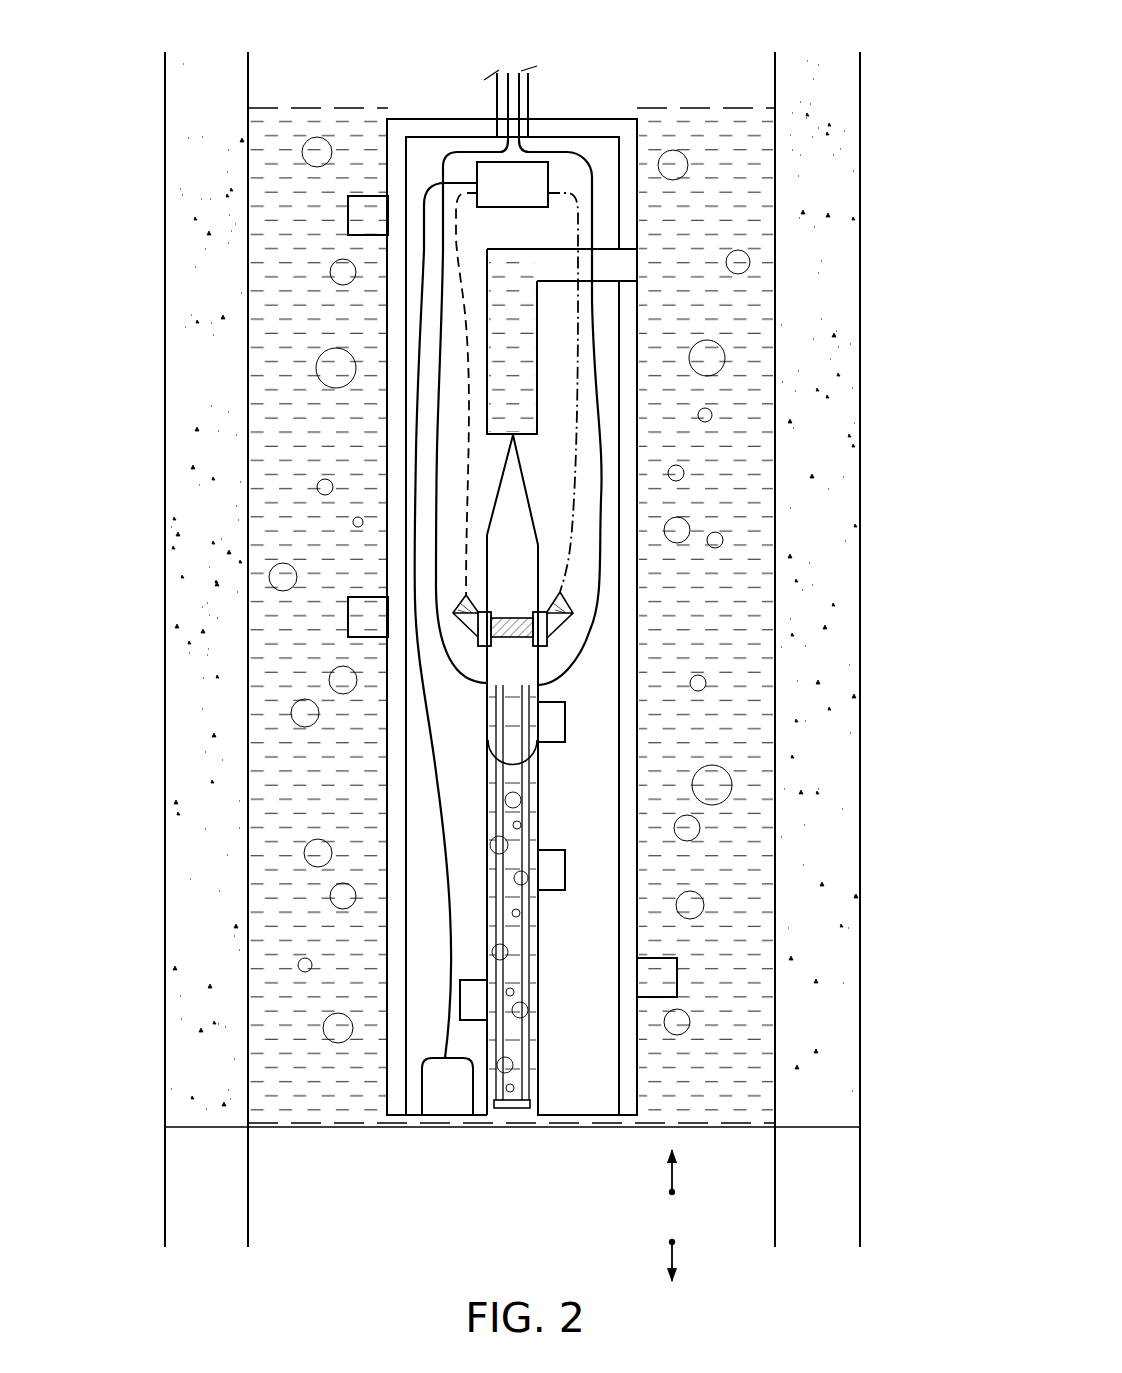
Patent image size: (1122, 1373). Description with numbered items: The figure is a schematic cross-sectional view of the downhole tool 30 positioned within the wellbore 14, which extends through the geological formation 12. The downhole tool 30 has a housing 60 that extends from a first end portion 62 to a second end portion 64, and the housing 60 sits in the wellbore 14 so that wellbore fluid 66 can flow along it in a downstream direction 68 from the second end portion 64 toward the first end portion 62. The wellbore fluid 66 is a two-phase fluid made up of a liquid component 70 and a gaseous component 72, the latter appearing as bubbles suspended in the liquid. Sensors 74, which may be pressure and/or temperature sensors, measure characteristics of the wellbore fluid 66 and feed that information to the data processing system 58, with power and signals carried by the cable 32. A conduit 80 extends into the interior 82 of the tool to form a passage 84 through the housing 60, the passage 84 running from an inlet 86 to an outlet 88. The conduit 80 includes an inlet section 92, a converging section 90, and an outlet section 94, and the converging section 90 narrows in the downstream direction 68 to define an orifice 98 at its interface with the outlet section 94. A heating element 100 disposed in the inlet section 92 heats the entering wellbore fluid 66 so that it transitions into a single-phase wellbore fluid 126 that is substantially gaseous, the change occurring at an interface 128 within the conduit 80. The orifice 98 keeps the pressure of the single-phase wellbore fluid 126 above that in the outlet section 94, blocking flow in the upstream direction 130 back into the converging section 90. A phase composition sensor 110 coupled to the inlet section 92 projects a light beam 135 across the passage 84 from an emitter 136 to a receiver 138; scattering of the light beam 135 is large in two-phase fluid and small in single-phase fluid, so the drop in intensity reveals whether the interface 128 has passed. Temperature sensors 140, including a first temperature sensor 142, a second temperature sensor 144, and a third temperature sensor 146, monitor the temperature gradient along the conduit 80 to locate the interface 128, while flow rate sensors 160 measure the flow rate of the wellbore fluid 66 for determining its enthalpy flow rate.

The geological formation 12 is at (845, 862).
The wellbore 14 is at (868, 635).
The downhole tool 30 is at (641, 487).
The cable 32 is at (530, 80).
The data processing system 58 is at (512, 184).
The housing 60 is at (628, 422).
The first end portion 62 is at (559, 628).
The second end portion 64 is at (378, 1134).
The wellbore fluid 66 is at (538, 1050).
The downstream direction 68 is at (676, 1170).
The liquid component 70 is at (511, 615).
The gaseous component 72 is at (330, 896).
The sensors 74 is at (348, 215).
The conduit 80 is at (538, 1100).
The interior 82 is at (578, 830).
The passage 84 is at (512, 341).
The inlet 86 is at (502, 1119).
The outlet 88 is at (629, 262).
The converging section 90 is at (536, 486).
The inlet section 92 is at (550, 907).
The outlet section 94 is at (545, 357).
The orifice 98 is at (515, 433).
The heating element 100 is at (488, 820).
The phase composition sensor 110 is at (513, 601).
The single-phase wellbore fluid 126 is at (510, 536).
The interface 128 is at (500, 765).
The upstream direction 130 is at (676, 1250).
The light beam 135 is at (580, 611).
The emitter 136 is at (550, 640).
The receiver 138 is at (477, 635).
The temperature sensors 140 is at (512, 860).
The first temperature sensor 142 is at (458, 1000).
The second temperature sensor 144 is at (566, 870).
The third temperature sensor 146 is at (566, 722).
The flow rate sensors 160 is at (678, 977).